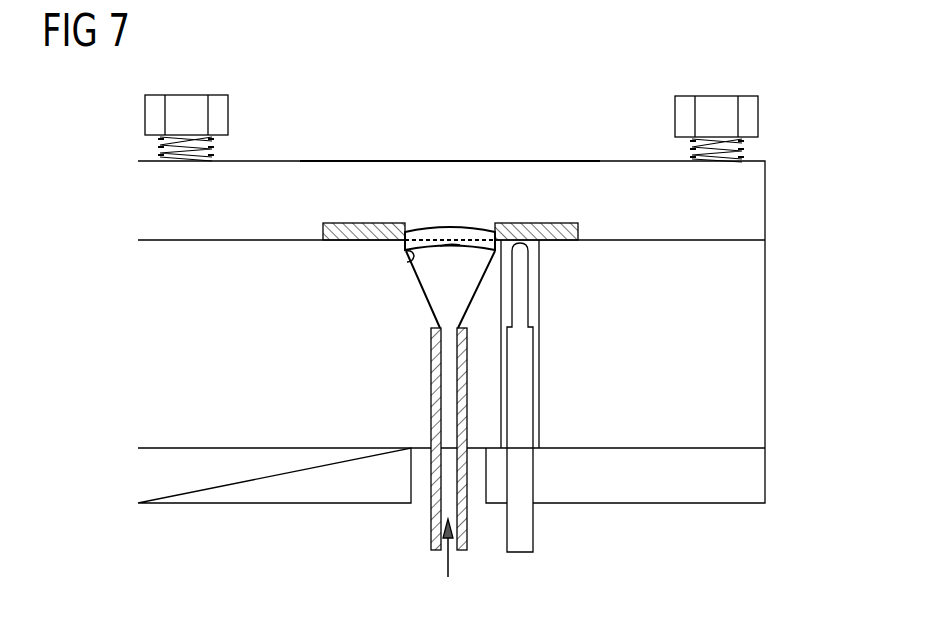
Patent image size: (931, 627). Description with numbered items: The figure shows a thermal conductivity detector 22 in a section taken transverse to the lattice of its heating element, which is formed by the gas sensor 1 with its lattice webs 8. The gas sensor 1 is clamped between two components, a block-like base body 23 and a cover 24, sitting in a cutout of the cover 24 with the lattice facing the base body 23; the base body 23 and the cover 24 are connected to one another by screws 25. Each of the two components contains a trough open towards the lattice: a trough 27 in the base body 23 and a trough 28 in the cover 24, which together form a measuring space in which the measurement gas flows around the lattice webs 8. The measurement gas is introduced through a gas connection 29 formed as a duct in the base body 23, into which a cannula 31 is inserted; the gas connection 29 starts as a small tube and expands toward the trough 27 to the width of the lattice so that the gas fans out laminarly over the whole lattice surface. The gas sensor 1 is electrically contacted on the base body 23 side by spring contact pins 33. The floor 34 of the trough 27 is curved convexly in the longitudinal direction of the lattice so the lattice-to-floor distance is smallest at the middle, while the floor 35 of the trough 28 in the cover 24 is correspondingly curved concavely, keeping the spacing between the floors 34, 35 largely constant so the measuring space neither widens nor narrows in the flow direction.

The gas sensor 1 is at (343, 222).
The lattice webs 8 is at (455, 232).
The thermal conductivity detector 22 is at (600, 118).
The base body 23 is at (137, 336).
The cover 24 is at (388, 161).
The screws 25 is at (218, 115).
The trough 27 is at (405, 258).
The trough 28 is at (424, 228).
The gas connection 29 is at (421, 300).
The cannula 31 is at (430, 522).
The spring contact pins 33 is at (527, 520).
The floor 34 is at (461, 247).
The floor 35 is at (478, 228).